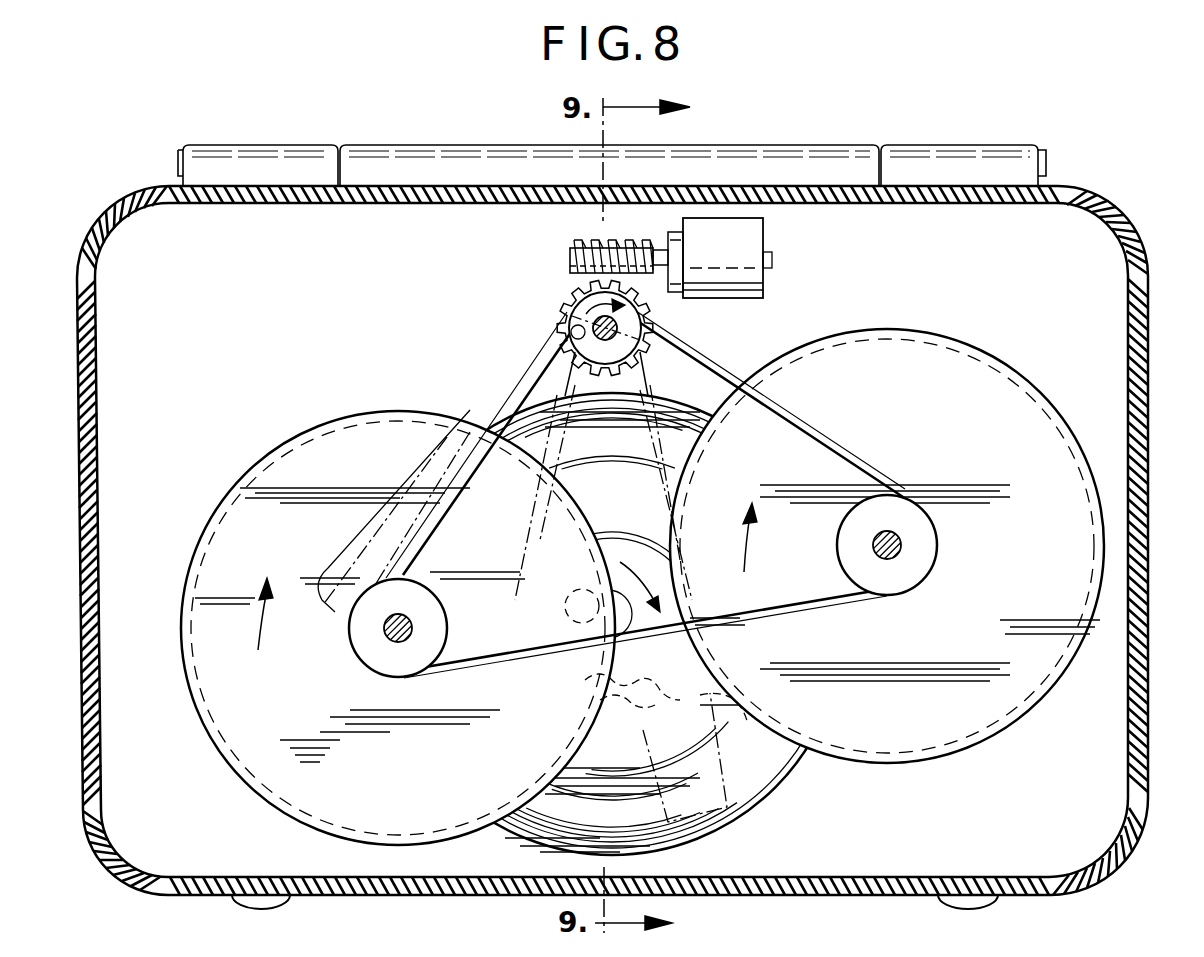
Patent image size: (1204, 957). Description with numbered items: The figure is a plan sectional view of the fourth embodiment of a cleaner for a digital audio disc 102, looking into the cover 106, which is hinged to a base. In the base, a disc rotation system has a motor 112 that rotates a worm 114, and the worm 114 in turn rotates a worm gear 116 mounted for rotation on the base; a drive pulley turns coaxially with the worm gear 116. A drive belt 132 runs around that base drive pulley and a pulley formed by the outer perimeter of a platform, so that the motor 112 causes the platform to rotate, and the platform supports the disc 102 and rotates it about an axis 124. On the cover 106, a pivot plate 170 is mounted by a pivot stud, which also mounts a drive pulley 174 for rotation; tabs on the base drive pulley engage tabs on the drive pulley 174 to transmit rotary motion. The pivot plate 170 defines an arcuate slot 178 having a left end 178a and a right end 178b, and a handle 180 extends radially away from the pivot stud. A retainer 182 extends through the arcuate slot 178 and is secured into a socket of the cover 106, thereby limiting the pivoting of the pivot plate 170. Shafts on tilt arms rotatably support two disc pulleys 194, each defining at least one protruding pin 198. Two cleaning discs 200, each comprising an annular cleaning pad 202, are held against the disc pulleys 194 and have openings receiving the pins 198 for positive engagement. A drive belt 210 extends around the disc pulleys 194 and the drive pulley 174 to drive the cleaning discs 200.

The digital audio disc 102 is at (790, 768).
The cover 106 is at (1148, 450).
The motor 112 is at (753, 230).
The worm 114 is at (570, 256).
The worm gear 116 is at (647, 298).
The axis 124 is at (572, 605).
The drive belt 132 is at (720, 375).
The pivot plate 170 is at (388, 482).
The drive pulley 174 is at (563, 313).
The arcuate slot 178 is at (630, 688).
The left end 178a is at (600, 695).
The right end 178b is at (700, 703).
The handle 180 is at (738, 805).
The retainer 182 is at (632, 716).
The disc pulley 194 is at (365, 668).
The protruding pin 198 is at (412, 618).
The cleaning disc 200 is at (290, 800).
The annular cleaning pad 202 is at (215, 732).
The drive belt 210 is at (569, 338).